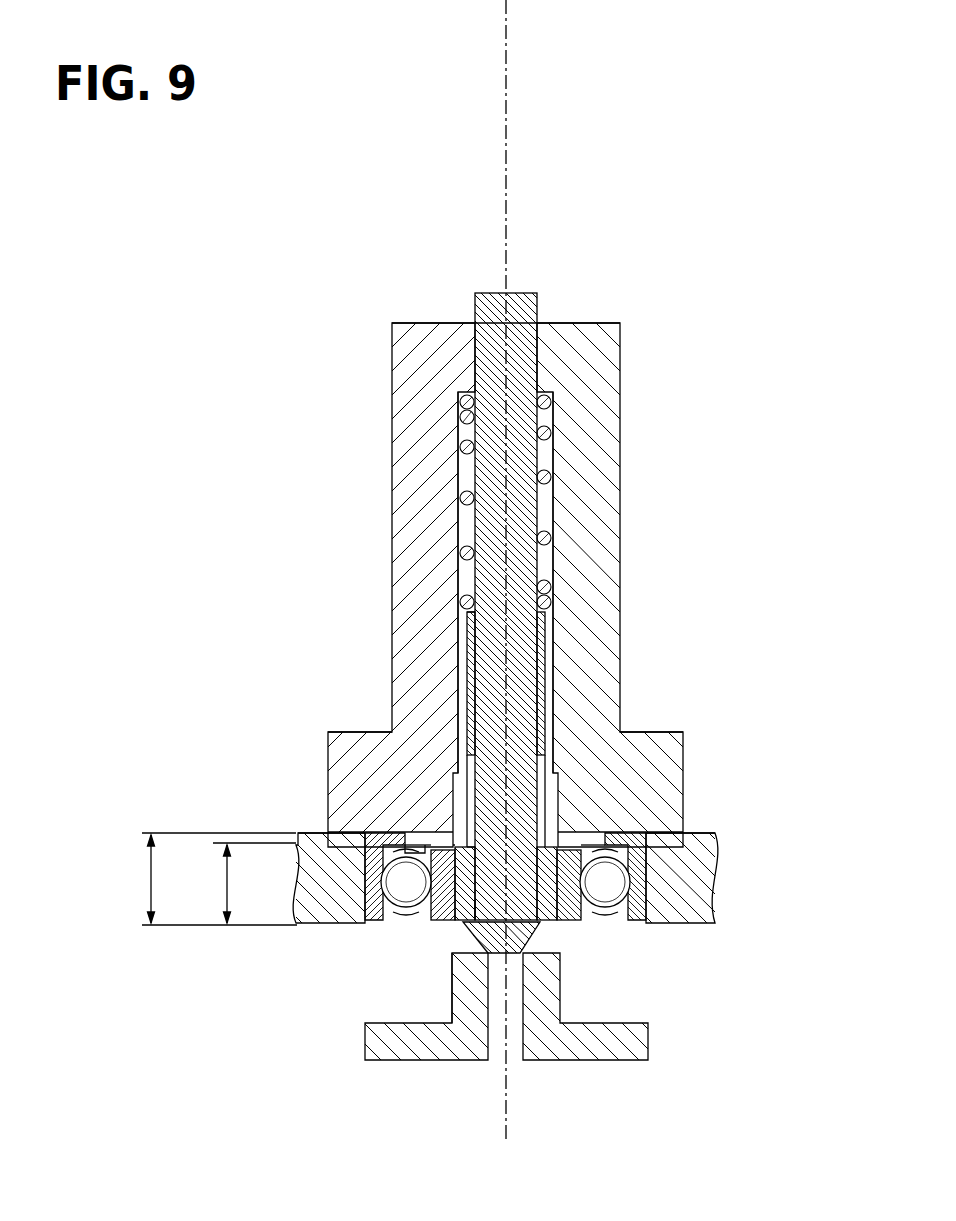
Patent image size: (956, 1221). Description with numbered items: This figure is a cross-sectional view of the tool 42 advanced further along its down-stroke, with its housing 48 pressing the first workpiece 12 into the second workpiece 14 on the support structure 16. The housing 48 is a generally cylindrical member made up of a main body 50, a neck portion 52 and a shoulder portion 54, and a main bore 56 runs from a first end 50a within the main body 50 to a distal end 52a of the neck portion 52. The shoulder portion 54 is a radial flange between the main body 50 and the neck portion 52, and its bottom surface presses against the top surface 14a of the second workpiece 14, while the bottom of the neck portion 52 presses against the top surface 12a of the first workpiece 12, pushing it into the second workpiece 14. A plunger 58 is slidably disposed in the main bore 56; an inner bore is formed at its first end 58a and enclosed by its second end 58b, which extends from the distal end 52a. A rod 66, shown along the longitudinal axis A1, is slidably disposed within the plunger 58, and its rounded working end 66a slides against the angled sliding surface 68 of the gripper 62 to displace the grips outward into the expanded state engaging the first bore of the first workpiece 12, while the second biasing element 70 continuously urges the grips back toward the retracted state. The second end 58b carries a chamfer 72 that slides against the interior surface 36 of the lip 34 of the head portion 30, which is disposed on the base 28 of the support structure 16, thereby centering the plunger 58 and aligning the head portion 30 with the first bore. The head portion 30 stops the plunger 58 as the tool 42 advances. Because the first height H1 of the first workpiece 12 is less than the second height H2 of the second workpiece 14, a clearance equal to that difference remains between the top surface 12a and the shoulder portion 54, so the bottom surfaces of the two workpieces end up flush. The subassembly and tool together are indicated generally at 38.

The nozzle unit 38 is at (453, 638).
The tool 42 is at (548, 509).
The housing 48 is at (586, 323).
The main body 50 is at (491, 585).
The first end 50a is at (462, 415).
The shoulder portion 54 is at (688, 742).
The main bore 56 is at (549, 404).
The rod 66 is at (574, 647).
The working end 66a is at (531, 956).
The second biasing element 70 is at (552, 536).
The plunger 58 is at (435, 821).
The first end 58a is at (466, 600).
The second end 58b is at (497, 940).
The sliding surface 68 is at (531, 850).
The gripper 62 is at (458, 928).
The chamfer 72 is at (453, 962).
The interior surface 36 is at (547, 935).
The neck portion 52 is at (495, 831).
The distal end 52a is at (387, 850).
The second workpiece 14 is at (523, 857).
The top surface 14a is at (300, 833).
The first workpiece 12 is at (690, 882).
The top surface 12a is at (622, 838).
The support structure 16 is at (450, 1030).
The base 28 is at (378, 1033).
The head portion 30 is at (572, 1033).
The lip 34 is at (462, 945).
The first height H1 is at (254, 883).
The second height H2 is at (217, 879).
The longitudinal axis A1 is at (522, 1135).